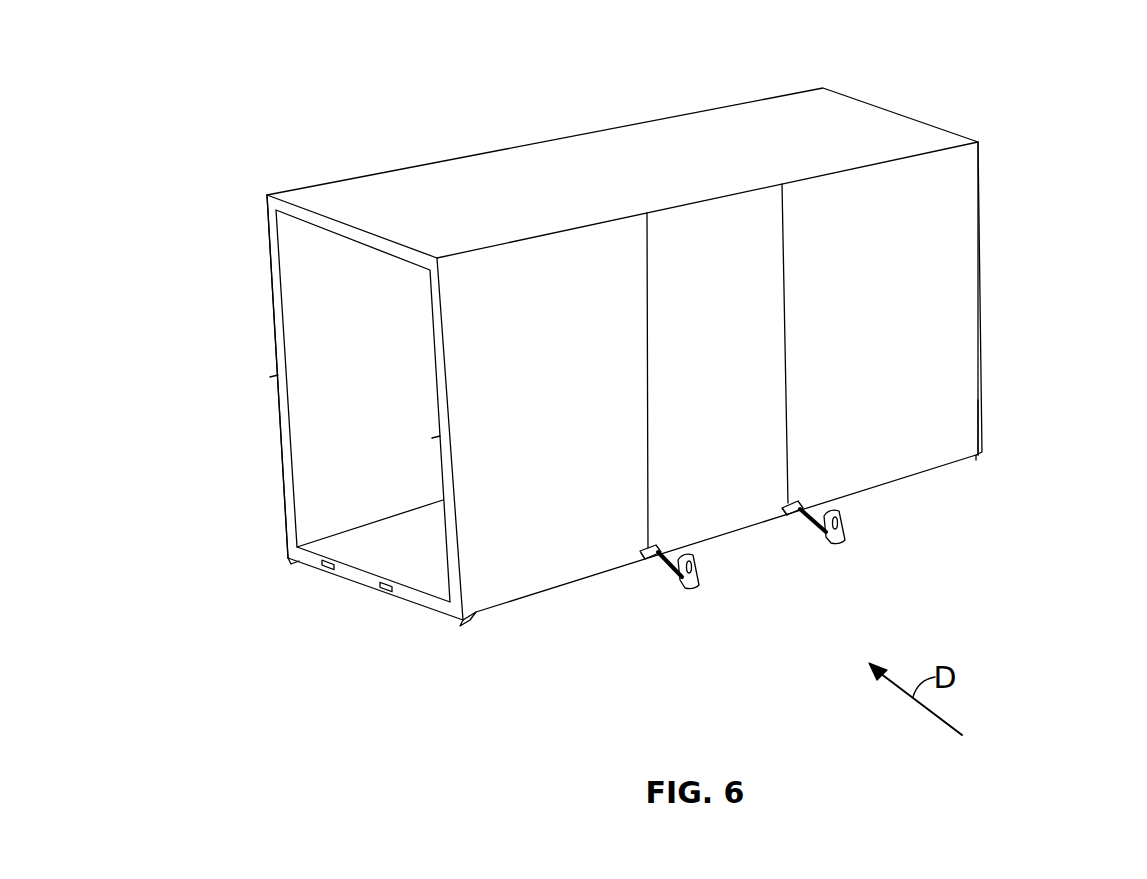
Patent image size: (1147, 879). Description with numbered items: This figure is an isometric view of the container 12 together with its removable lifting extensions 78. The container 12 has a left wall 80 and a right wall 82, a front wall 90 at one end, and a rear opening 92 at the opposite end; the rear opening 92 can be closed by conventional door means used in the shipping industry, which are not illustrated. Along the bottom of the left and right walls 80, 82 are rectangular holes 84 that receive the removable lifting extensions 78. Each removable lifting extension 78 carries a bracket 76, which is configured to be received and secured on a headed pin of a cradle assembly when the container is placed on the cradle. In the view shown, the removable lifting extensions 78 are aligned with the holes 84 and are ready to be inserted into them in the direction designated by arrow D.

The container 12 is at (1038, 302).
The bracket 76 is at (843, 515).
The removable lifting extension 78 is at (677, 584).
The left wall 80 is at (782, 93).
The right wall 82 is at (972, 395).
The rectangular hole 84 is at (647, 561).
The front wall 90 is at (980, 185).
The rear opening 92 is at (293, 283).